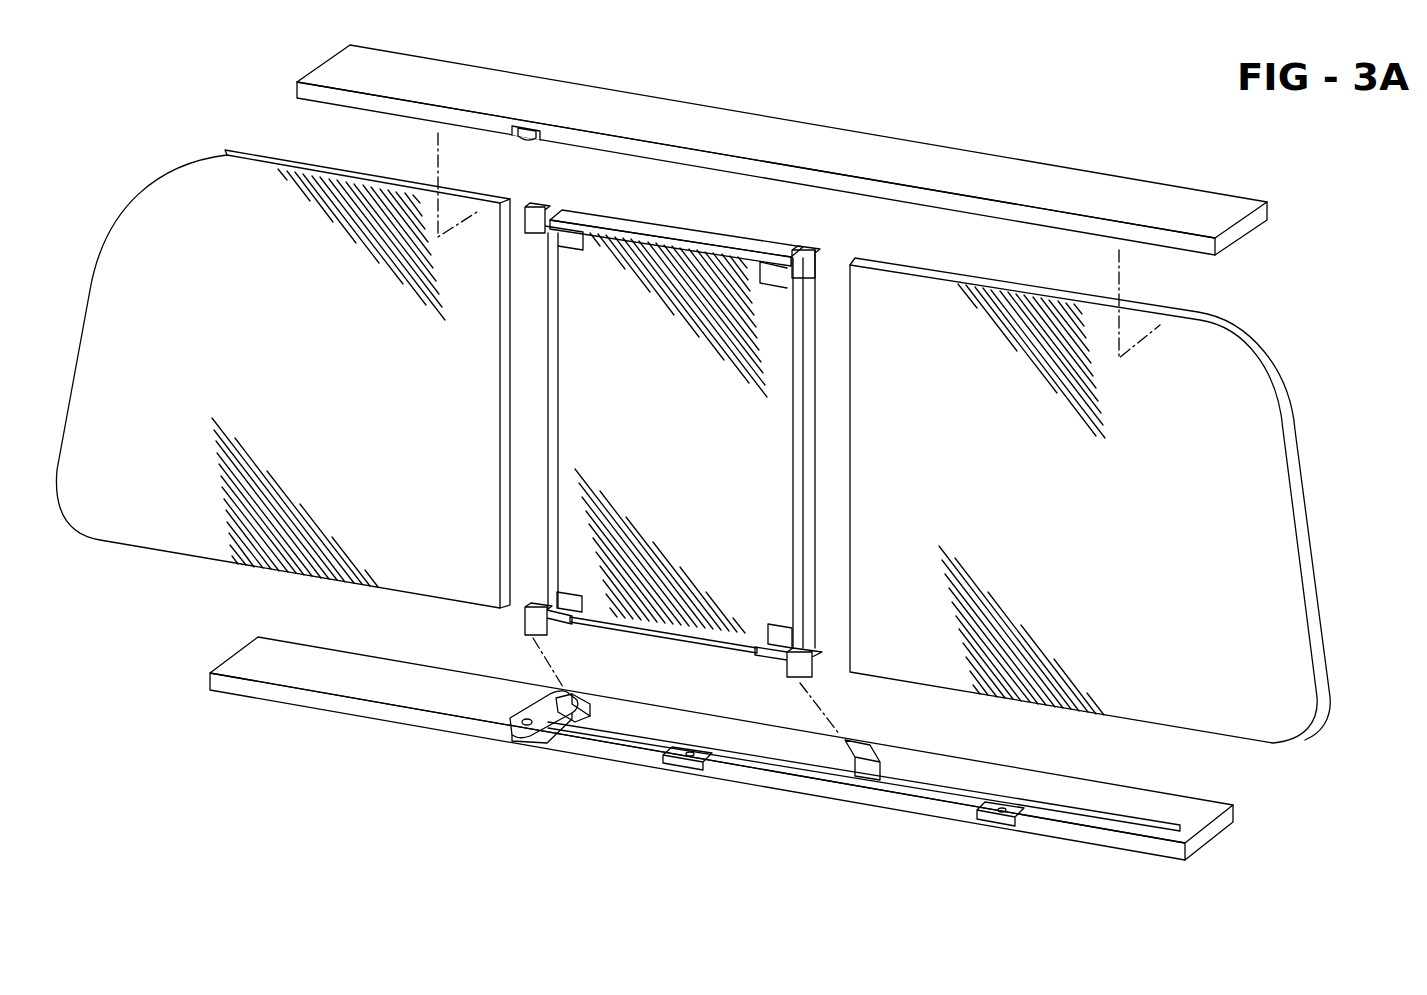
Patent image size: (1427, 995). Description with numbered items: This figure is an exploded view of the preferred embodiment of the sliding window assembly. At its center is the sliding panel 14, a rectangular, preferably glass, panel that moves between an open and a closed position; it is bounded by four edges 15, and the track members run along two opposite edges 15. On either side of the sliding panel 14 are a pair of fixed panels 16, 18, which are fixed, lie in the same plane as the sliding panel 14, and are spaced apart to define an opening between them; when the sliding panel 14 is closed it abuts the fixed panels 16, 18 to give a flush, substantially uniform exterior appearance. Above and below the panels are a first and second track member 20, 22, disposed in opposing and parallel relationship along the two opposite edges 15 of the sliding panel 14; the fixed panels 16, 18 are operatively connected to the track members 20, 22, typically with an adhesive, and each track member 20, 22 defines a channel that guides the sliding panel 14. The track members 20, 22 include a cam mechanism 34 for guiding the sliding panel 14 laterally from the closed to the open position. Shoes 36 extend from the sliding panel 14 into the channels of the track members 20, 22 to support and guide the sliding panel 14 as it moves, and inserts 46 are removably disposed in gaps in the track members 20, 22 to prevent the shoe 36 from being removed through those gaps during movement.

The sliding panel 14 is at (684, 437).
The edge 15 is at (653, 228).
The fixed panel 16 is at (1230, 430).
The fixed panel 18 is at (168, 213).
The track member 20 is at (1203, 835).
The track member 22 is at (1225, 208).
The cam mechanism 34 is at (528, 128).
The shoe 36 is at (535, 212).
The insert 46 is at (988, 812).